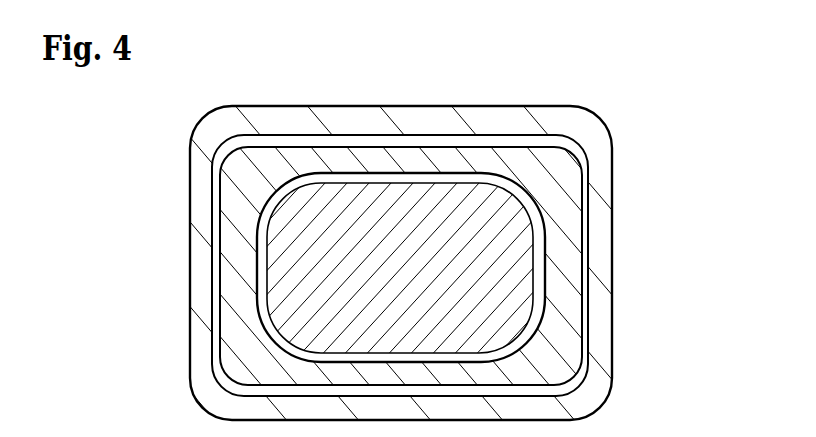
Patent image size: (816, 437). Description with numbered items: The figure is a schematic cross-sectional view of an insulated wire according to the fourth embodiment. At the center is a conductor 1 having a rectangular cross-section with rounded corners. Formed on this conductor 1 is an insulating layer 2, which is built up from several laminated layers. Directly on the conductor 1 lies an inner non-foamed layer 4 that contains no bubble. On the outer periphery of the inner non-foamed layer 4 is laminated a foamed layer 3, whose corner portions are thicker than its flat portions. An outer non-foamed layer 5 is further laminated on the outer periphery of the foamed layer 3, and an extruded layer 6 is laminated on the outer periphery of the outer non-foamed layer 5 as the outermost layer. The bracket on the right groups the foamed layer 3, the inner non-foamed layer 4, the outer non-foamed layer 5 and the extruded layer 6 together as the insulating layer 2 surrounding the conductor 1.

The conductor 1 is at (450, 217).
The insulating layer 2 is at (408, 263).
The foamed layer 3 is at (560, 190).
The inner non-foamed layer 4 is at (550, 230).
The outer non-foamed layer 5 is at (593, 292).
The extruded layer 6 is at (488, 267).